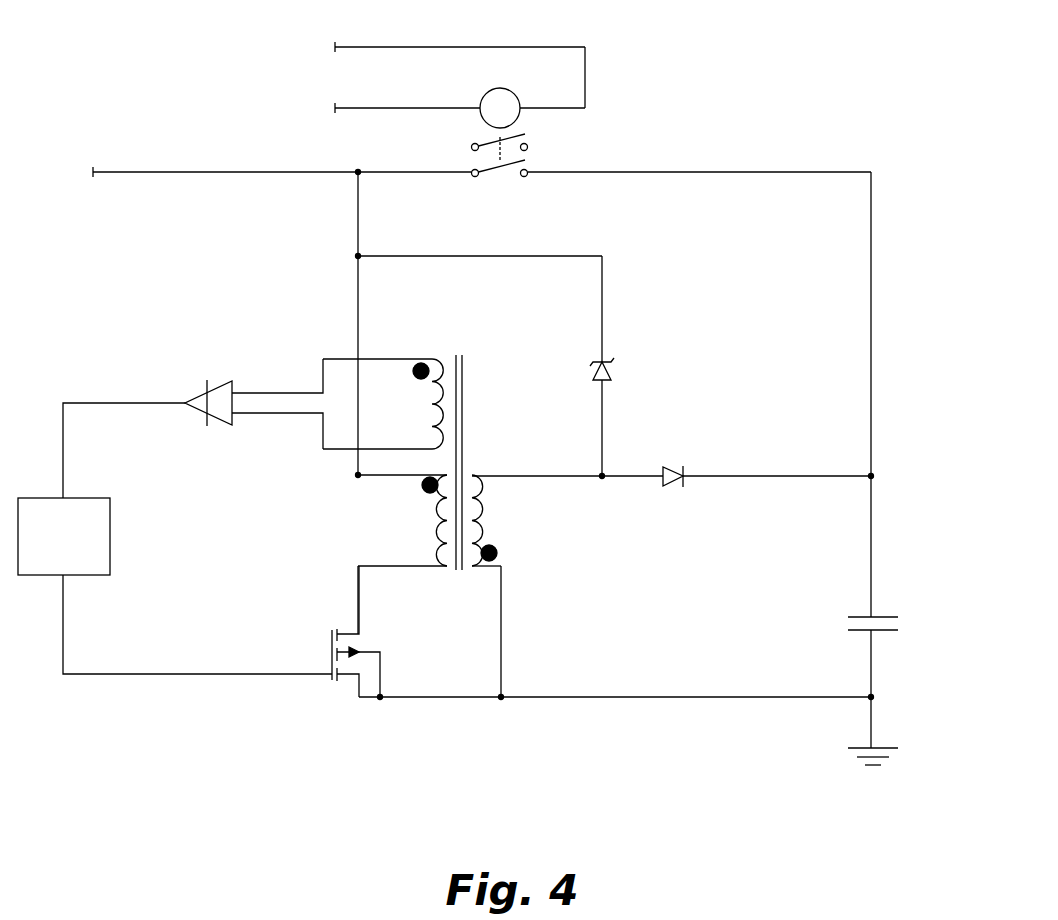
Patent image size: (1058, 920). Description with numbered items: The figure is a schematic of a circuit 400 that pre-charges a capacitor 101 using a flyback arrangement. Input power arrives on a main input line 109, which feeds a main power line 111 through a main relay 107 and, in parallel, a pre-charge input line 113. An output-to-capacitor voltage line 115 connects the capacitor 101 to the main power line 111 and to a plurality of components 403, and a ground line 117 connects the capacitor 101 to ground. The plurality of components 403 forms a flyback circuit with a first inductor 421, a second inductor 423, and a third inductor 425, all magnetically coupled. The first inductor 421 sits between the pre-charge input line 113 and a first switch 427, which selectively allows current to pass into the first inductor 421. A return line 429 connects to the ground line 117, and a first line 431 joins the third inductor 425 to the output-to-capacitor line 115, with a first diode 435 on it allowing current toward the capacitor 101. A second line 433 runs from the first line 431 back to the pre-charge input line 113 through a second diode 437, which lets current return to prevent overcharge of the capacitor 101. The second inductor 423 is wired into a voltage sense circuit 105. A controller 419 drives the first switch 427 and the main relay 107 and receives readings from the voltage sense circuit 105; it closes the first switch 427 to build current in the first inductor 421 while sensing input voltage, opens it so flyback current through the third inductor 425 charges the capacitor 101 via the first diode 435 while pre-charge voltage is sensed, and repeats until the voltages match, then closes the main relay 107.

The circuit 400 is at (190, 34).
The capacitor 101 is at (880, 632).
The voltage sense circuit 105 is at (312, 382).
The main relay 107 is at (478, 164).
The main input line 109 is at (143, 175).
The main power line 111 is at (735, 170).
The pre-charge input line 113 is at (358, 232).
The output-to-capacitor voltage line 115 is at (872, 566).
The ground line 117 is at (872, 735).
The plurality of components 403 is at (735, 366).
The controller 419 is at (44, 546).
The first inductor 421 is at (443, 568).
The second inductor 423 is at (436, 358).
The third inductor 425 is at (478, 474).
The first switch 427 is at (335, 682).
The return line 429 is at (682, 700).
The first line 431 is at (738, 478).
The second line 433 is at (602, 305).
The first diode 435 is at (673, 486).
The second diode 437 is at (595, 375).